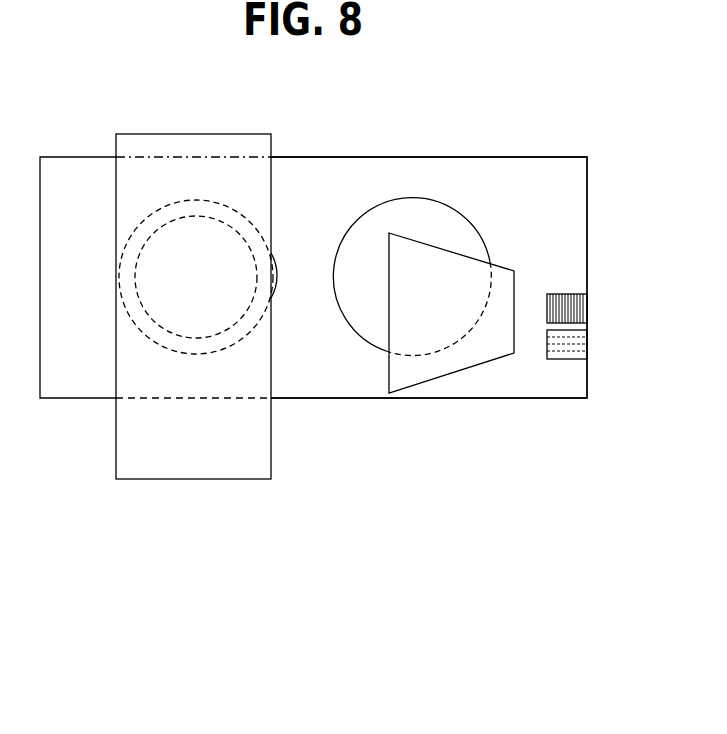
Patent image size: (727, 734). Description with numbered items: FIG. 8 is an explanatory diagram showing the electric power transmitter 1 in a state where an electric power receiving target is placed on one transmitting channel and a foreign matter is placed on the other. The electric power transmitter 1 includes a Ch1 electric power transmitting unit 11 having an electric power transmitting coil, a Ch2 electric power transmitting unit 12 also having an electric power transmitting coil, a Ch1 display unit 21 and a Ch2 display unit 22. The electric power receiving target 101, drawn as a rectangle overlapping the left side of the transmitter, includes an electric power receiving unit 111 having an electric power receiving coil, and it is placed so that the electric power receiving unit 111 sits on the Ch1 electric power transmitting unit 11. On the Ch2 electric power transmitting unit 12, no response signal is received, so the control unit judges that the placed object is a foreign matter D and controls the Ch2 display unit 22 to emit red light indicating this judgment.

The electric power transmitter 1 is at (483, 157).
The Ch1 electric power transmitting unit 11 is at (254, 333).
The electric power receiving target 101 is at (272, 177).
The electric power receiving unit 111 is at (197, 217).
The Ch2 electric power transmitting unit 12 is at (480, 322).
The foreign matter D is at (430, 380).
The Ch2 display unit 22 is at (587, 305).
The Ch1 display unit 21 is at (587, 340).